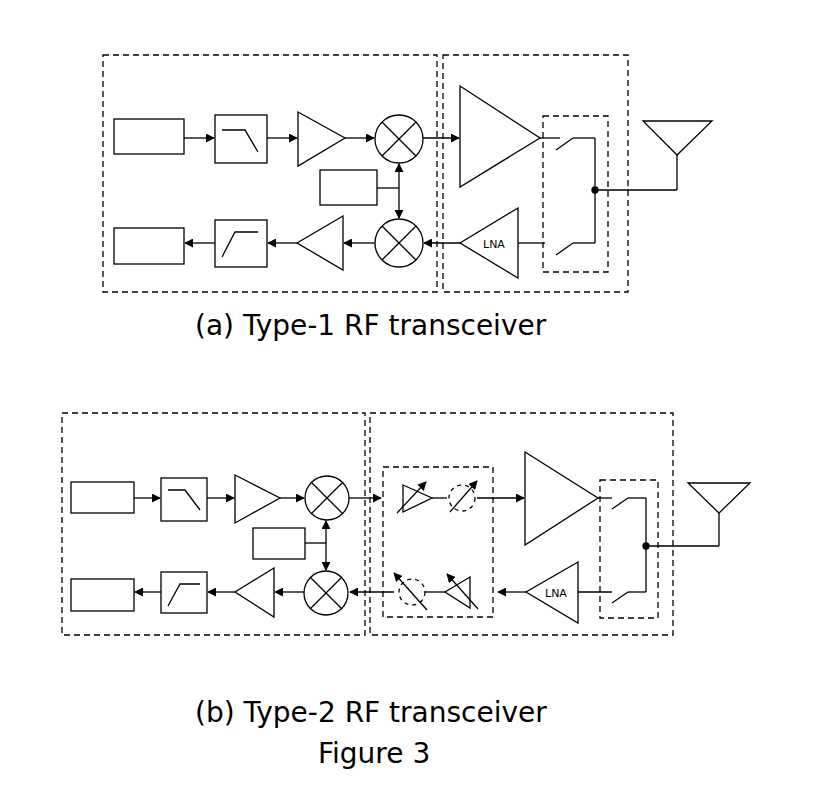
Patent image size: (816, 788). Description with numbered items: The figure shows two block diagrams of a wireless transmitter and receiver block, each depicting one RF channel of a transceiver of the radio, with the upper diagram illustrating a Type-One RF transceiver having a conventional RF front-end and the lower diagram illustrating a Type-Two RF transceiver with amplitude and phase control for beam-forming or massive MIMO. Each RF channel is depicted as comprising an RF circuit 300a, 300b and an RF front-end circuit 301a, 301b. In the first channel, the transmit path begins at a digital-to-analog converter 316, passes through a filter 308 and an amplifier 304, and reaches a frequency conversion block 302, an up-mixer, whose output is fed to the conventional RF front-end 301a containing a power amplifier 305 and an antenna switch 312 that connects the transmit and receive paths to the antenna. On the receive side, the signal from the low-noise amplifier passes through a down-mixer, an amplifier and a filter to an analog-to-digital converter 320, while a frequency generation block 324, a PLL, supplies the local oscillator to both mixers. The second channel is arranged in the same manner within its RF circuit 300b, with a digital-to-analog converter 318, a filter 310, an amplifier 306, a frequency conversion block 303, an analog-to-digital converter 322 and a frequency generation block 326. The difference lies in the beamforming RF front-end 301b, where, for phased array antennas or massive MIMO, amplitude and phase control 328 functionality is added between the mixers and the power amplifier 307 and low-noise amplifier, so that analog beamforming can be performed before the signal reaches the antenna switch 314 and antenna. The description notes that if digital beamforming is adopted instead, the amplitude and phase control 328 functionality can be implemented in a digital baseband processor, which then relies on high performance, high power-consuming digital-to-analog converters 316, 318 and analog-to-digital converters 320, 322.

The RF circuit 300a is at (330, 55).
The Type-1 RF front-end 301a is at (600, 55).
The frequency conversion block 302 is at (398, 115).
The amplifier 304 is at (298, 114).
The amplifier 305 is at (470, 92).
The filter 308 is at (215, 116).
The switch 312 is at (608, 116).
The digital-to-analog converter 316 is at (116, 118).
The analog-to-digital converter 320 is at (116, 228).
The frequency generation block 324 is at (320, 194).
The RF circuit 300b is at (270, 413).
The Type-2 RF front-end 301b is at (630, 413).
The frequency conversion block 303 is at (322, 477).
The amplifier 306 is at (234, 478).
The amplifier 307 is at (540, 462).
The filter 310 is at (162, 478).
The switch 314 is at (658, 480).
The digital-to-analog converter 318 is at (75, 481).
The analog-to-digital converter 322 is at (75, 579).
The frequency generation block 326 is at (253, 551).
The amplitude and phase control 328 is at (495, 619).